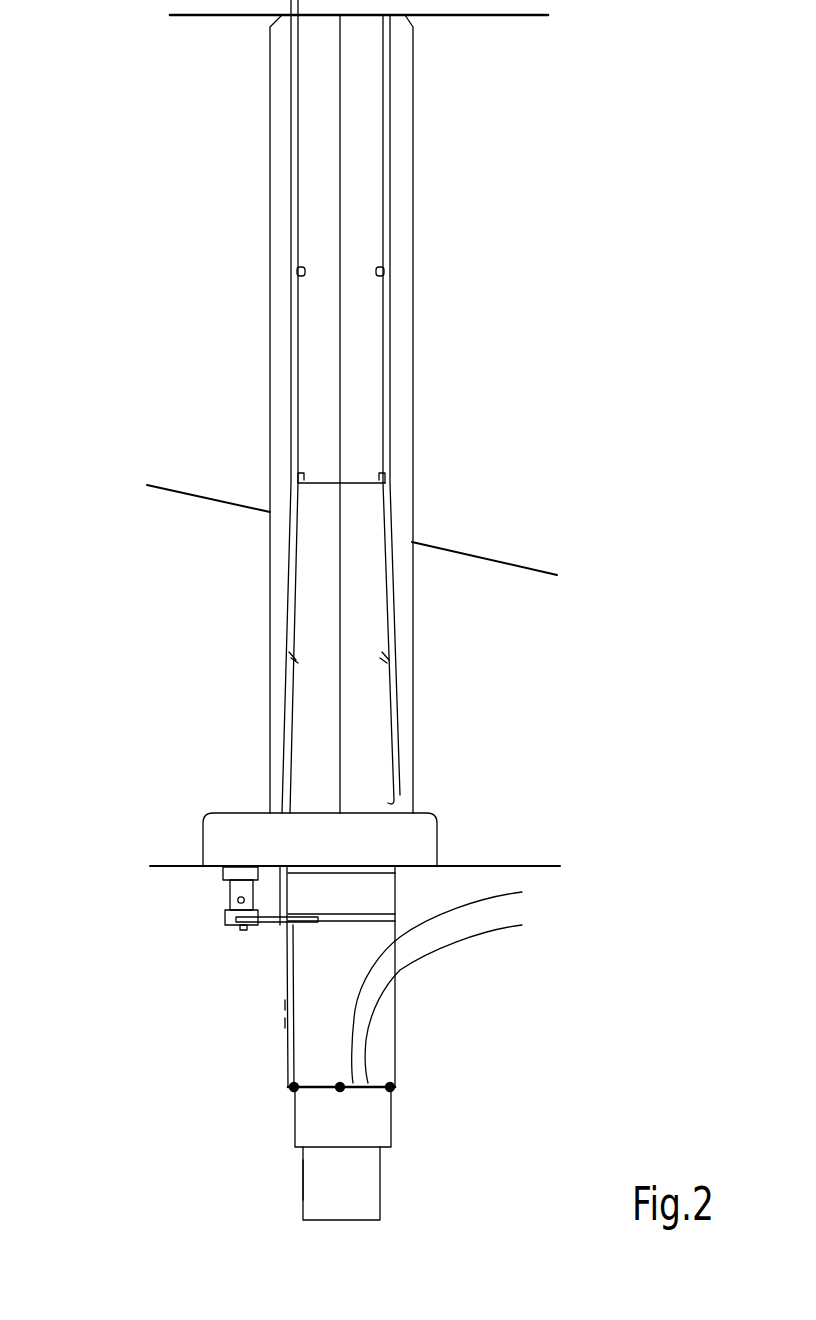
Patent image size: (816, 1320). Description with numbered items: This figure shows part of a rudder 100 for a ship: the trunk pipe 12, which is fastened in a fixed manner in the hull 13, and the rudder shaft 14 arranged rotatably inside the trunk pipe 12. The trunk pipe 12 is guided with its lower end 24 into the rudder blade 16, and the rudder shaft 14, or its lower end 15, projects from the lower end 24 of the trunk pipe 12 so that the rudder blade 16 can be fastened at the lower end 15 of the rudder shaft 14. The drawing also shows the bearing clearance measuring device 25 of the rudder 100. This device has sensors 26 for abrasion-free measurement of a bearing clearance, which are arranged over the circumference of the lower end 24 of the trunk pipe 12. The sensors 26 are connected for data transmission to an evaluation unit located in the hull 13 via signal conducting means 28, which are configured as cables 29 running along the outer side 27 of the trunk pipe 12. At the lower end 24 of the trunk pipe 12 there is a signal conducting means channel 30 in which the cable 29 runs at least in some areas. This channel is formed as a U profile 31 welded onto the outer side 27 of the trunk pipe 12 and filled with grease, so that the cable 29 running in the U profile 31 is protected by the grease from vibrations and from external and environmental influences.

The rudder 100 is at (720, 517).
The trunk pipe 12 is at (270, 593).
The hull 13 is at (505, 567).
The rudder shaft 14 is at (313, 353).
The lower end of the rudder shaft 15 is at (292, 1182).
The rudder blade 16 is at (520, 865).
The lower end of the trunk pipe 24 is at (410, 987).
The bearing clearance measuring device 25 is at (318, 1096).
The sensors 26 is at (294, 1087).
The outer side of the trunk pipe 27 is at (322, 953).
The signal conducting means 28 is at (283, 967).
The cables 29 is at (285, 985).
The signal conducting means channel 30 is at (285, 1005).
The U profile 31 is at (285, 1023).